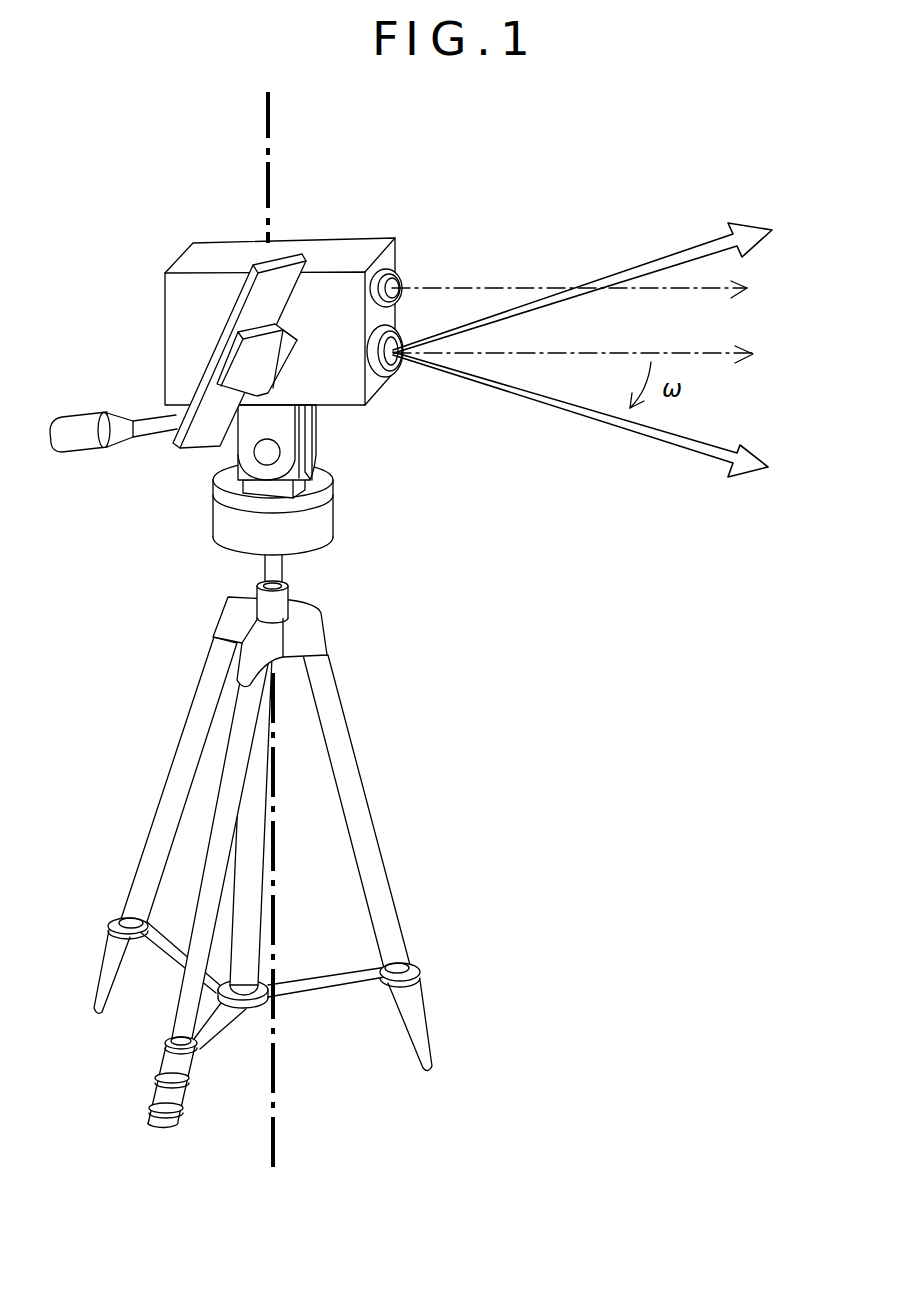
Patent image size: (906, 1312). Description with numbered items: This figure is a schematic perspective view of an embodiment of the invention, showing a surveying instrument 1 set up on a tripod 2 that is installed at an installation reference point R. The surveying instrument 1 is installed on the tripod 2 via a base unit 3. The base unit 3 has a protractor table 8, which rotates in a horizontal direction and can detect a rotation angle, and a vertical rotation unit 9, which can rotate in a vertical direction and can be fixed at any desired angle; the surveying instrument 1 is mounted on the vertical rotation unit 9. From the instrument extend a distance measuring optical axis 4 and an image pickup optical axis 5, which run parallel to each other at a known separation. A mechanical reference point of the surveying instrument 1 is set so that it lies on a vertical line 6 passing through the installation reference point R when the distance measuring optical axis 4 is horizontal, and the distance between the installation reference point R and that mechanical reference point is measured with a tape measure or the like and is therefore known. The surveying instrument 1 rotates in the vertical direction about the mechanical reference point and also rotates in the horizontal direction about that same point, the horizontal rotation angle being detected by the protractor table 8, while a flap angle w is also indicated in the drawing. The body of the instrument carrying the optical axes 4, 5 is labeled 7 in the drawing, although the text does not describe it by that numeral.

The surveying instrument 1 is at (222, 243).
The tripod 2 is at (172, 762).
The base unit 3 is at (336, 490).
The distance measuring optical axis 4 is at (618, 353).
The image pickup optical axis 5 is at (507, 290).
The vertical line 6 is at (273, 902).
The measuring unit main body 7 is at (339, 242).
The protractor table 8 is at (213, 539).
The vertical rotation unit 9 is at (240, 445).